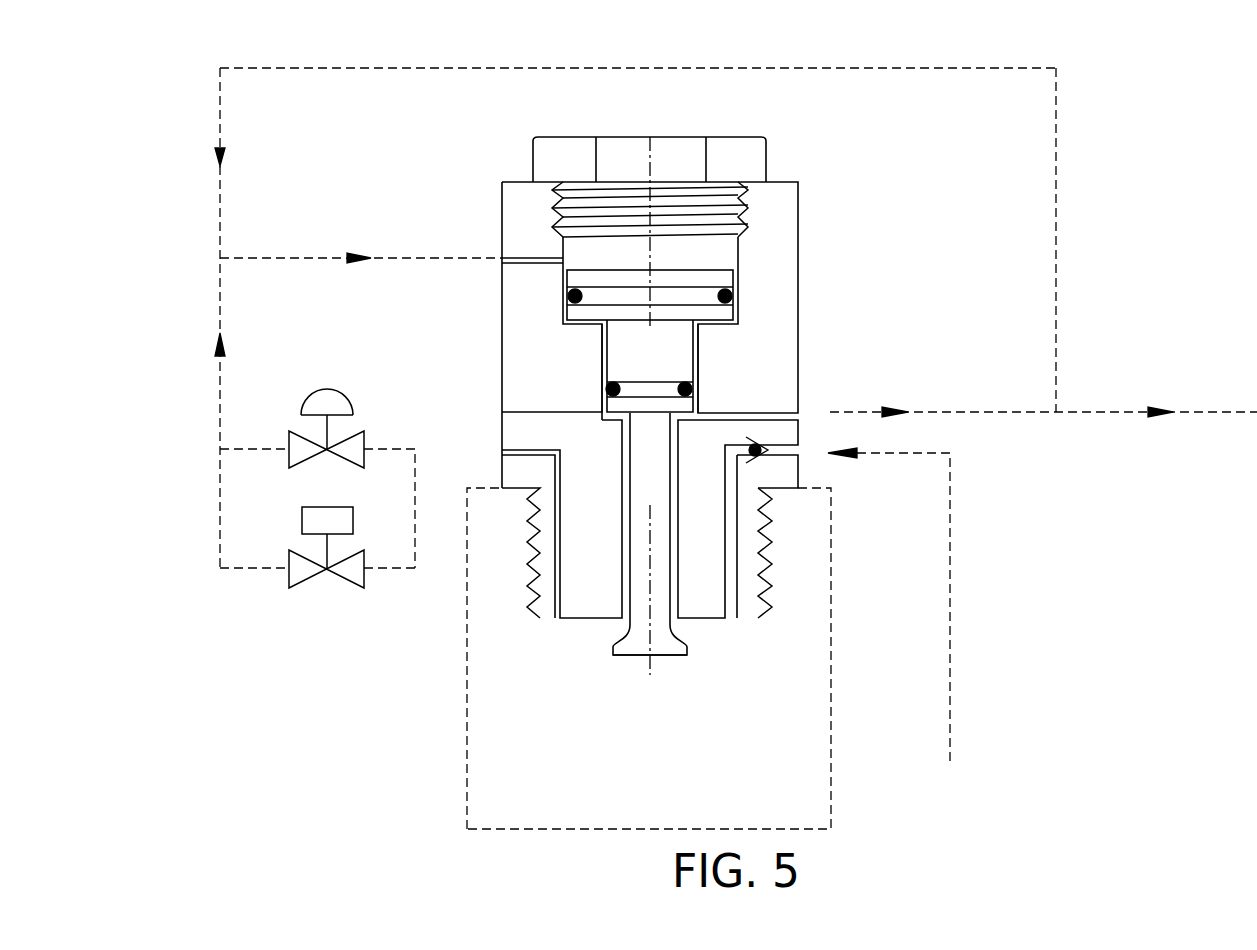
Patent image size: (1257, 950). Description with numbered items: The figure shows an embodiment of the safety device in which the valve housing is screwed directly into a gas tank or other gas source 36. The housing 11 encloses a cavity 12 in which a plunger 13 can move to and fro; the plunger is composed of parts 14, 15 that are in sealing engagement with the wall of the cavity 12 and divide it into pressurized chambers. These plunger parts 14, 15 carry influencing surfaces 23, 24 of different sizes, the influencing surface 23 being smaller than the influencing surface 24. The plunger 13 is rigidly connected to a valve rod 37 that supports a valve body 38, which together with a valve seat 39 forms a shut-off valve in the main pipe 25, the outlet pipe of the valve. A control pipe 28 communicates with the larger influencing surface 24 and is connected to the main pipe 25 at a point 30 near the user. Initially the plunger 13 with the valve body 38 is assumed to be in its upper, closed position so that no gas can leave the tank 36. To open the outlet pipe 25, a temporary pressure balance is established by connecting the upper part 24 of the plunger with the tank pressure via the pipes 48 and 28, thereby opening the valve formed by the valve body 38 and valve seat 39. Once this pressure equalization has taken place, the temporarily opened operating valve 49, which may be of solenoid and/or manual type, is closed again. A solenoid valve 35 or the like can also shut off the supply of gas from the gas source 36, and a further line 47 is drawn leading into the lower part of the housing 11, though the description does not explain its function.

The housing 11 is at (780, 296).
The cavity 12 is at (602, 350).
The plunger 13 is at (673, 347).
The plunger part 14 is at (690, 388).
The plunger part 15 is at (567, 294).
The influencing surface 23 is at (605, 408).
The influencing surface 24 is at (707, 270).
The main pipe 25 is at (951, 412).
The control pipe 28 is at (661, 68).
The point 30 is at (1056, 412).
The solenoid valve 35 is at (301, 565).
The gas source 36 is at (800, 760).
The valve rod 37 is at (658, 532).
The valve body 38 is at (625, 647).
The valve seat 39 is at (680, 620).
The check valve passage 47 is at (770, 452).
The pipe 48 is at (560, 554).
The operating valve 49 is at (301, 447).